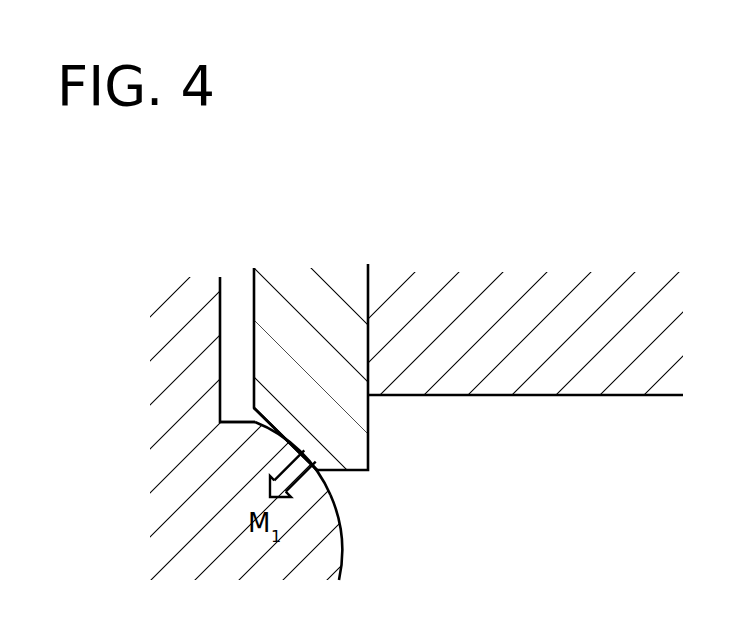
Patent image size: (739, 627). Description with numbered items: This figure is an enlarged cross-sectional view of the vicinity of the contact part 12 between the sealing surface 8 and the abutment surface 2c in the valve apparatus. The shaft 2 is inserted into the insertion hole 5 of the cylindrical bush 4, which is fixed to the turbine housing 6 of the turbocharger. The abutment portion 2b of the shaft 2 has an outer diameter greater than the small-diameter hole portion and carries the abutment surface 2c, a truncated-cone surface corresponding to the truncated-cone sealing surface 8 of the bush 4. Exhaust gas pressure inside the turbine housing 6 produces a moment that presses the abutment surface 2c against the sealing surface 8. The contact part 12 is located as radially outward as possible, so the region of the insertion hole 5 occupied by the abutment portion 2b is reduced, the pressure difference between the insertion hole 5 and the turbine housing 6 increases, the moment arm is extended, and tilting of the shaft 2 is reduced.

The shaft 2 is at (179, 316).
The abutment portion 2b is at (323, 558).
The abutment surface 2c is at (329, 494).
The bush 4 is at (370, 445).
The insertion hole 5 is at (253, 342).
The turbine housing 6 is at (596, 382).
The sealing surface 8 is at (256, 423).
The contact part 12 is at (311, 467).